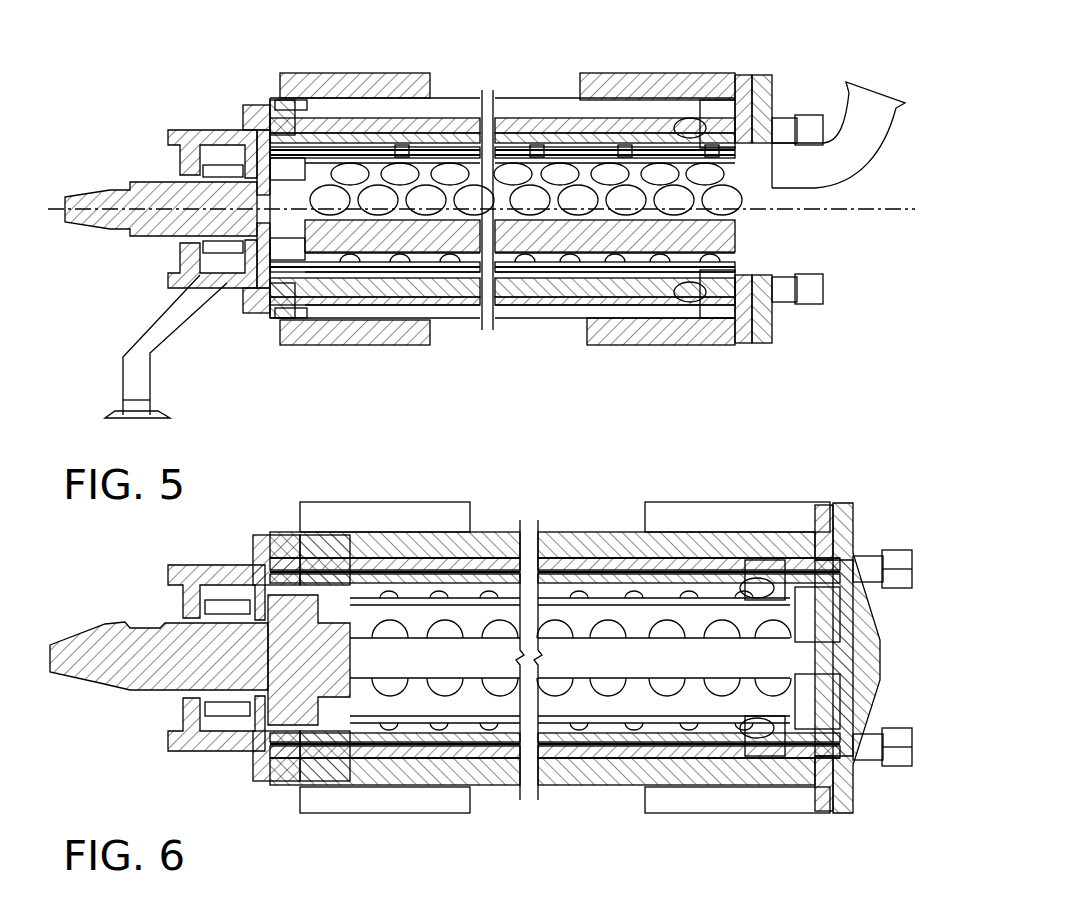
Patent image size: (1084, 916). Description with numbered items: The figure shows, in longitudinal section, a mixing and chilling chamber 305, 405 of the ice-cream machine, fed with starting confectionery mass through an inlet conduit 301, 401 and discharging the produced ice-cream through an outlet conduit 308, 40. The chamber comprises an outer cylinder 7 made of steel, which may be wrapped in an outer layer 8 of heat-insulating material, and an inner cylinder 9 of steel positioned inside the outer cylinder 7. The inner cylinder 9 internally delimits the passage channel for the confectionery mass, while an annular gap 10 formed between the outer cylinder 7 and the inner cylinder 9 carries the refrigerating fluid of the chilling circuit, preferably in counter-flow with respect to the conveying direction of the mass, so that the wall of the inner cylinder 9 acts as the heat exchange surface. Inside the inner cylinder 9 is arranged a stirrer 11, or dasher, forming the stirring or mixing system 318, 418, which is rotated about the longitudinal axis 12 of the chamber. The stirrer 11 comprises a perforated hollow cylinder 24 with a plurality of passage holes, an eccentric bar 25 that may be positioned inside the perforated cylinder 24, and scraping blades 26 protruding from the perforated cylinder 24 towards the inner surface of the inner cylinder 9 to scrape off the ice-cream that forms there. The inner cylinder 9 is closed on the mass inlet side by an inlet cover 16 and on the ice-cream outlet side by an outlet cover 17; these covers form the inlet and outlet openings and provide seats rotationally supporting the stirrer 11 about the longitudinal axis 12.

In FIG. 5, the outer cylinder 7 is at (448, 123).
In FIG. 6, the outer cylinder 7 is at (465, 560).
In FIG. 5, the outer layer 8 is at (468, 105).
In FIG. 6, the outer layer 8 is at (505, 540).
In FIG. 5, the inner cylinder 9 is at (372, 130).
In FIG. 6, the inner cylinder 9 is at (385, 555).
In FIG. 5, the annular gap 10 is at (408, 133).
In FIG. 6, the annular gap 10 is at (423, 563).
In FIG. 5, the stirrer 11 is at (583, 180).
In FIG. 6, the stirrer 11 is at (635, 600).
In FIG. 5, the longitudinal axis 12 is at (50, 206).
In FIG. 5, the inlet cover 16 is at (210, 130).
In FIG. 6, the inlet cover 16 is at (215, 568).
In FIG. 5, the outlet cover 17 is at (773, 100).
In FIG. 6, the outlet cover 17 is at (880, 623).
In FIG. 5, the hollow cylinder 24 is at (553, 215).
In FIG. 6, the hollow cylinder 24 is at (587, 700).
In FIG. 5, the eccentric bar 25 is at (460, 233).
In FIG. 6, the eccentric bar 25 is at (633, 660).
In FIG. 5, the scraping blades 26 is at (572, 270).
In FIG. 6, the scraping blades 26 is at (347, 743).
In FIG. 5, the outlet 40 is at (836, 160).
In FIG. 5, the first inlet conduit 301 is at (199, 346).
In FIG. 5, the first mixing and chilling chamber 305 is at (503, 209).
In FIG. 6, the first mixing and chilling chamber 305 is at (498, 635).
In FIG. 5, the first outlet conduit 308 is at (865, 137).
In FIG. 5, the first stirring or mixing system 318 is at (520, 102).
In FIG. 6, the first stirring or mixing system 318 is at (570, 590).
In FIG. 5, the second inlet conduit 401 is at (173, 322).
In FIG. 5, the second mixing and chilling chamber 405 is at (712, 58).
In FIG. 6, the second mixing and chilling chamber 405 is at (757, 487).
In FIG. 5, the second stirring or mixing system 418 is at (533, 177).
In FIG. 6, the second stirring or mixing system 418 is at (575, 620).